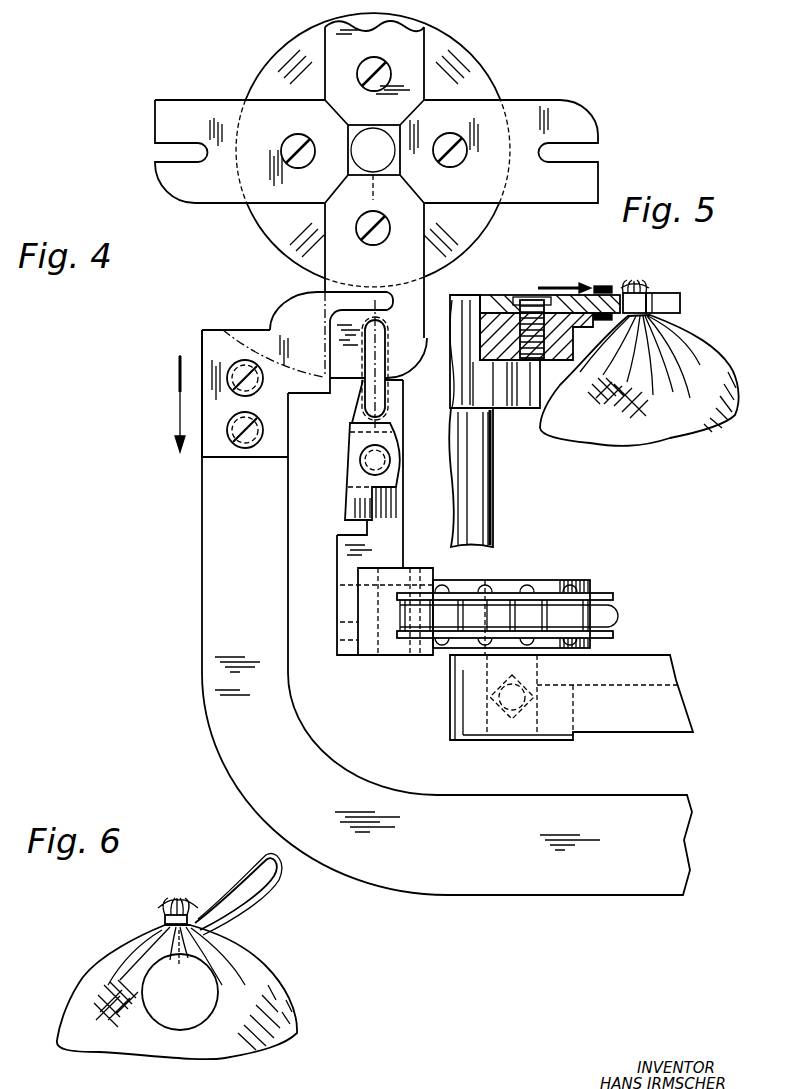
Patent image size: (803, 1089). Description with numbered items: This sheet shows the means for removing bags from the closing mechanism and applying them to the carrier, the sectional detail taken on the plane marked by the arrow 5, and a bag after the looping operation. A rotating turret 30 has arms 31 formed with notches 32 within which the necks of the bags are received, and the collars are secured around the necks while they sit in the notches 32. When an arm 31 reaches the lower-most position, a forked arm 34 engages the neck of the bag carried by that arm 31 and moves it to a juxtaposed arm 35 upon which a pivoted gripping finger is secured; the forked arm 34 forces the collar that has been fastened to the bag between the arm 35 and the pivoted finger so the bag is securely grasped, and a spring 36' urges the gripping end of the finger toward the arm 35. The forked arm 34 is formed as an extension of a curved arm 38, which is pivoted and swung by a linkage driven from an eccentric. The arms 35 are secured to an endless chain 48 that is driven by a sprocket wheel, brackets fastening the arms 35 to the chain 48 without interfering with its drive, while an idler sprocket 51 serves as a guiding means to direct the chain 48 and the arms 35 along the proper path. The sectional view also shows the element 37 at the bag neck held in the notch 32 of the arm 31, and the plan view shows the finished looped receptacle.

In FIG. 4, the arrow 5 is at (367, 397).
In FIG. 4, the rotating turret 30 is at (272, 228).
In FIG. 5, the rotating turret 30 is at (553, 352).
In FIG. 4, the arm 31 is at (173, 113).
In FIG. 5, the arm 31 is at (490, 306).
In FIG. 4, the notch 32 is at (580, 148).
In FIG. 5, the notch 32 is at (680, 304).
In FIG. 5, the forked arm 34 is at (604, 285).
In FIG. 4, the arm 35 is at (387, 547).
In FIG. 4, the spring 36' is at (394, 450).
In FIG. 5, the ring 37 is at (649, 293).
In FIG. 4, the curved arm 38 is at (447, 870).
In FIG. 4, the endless chain 48 is at (607, 597).
In FIG. 4, the idler sprocket 51 is at (548, 583).